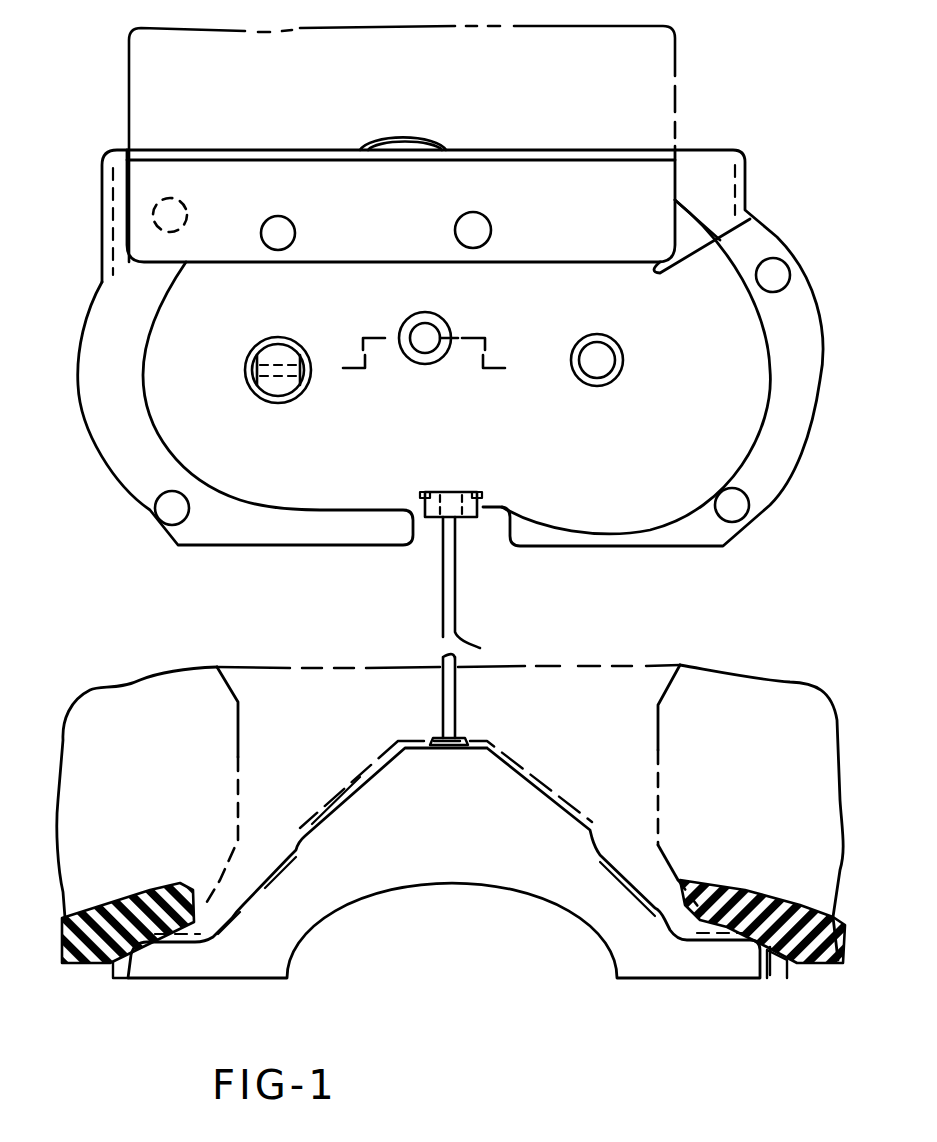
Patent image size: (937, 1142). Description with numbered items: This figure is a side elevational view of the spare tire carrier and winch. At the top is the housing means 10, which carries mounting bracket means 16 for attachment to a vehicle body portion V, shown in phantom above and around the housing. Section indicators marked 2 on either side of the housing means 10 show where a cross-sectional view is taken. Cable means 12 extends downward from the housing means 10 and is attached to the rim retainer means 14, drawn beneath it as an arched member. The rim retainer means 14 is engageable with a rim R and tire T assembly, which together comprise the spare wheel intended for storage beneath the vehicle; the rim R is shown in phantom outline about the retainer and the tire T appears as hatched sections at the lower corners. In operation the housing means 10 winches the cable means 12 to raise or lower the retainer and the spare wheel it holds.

The vehicle body portion V is at (150, 67).
The housing means 10 is at (770, 508).
The mounting bracket means 16 is at (742, 223).
The section line 2- 2 is at (60, 385).
The cable means 12 is at (453, 657).
The rim R is at (230, 809).
The rim retainer means 14 is at (323, 933).
The tire T is at (113, 970).